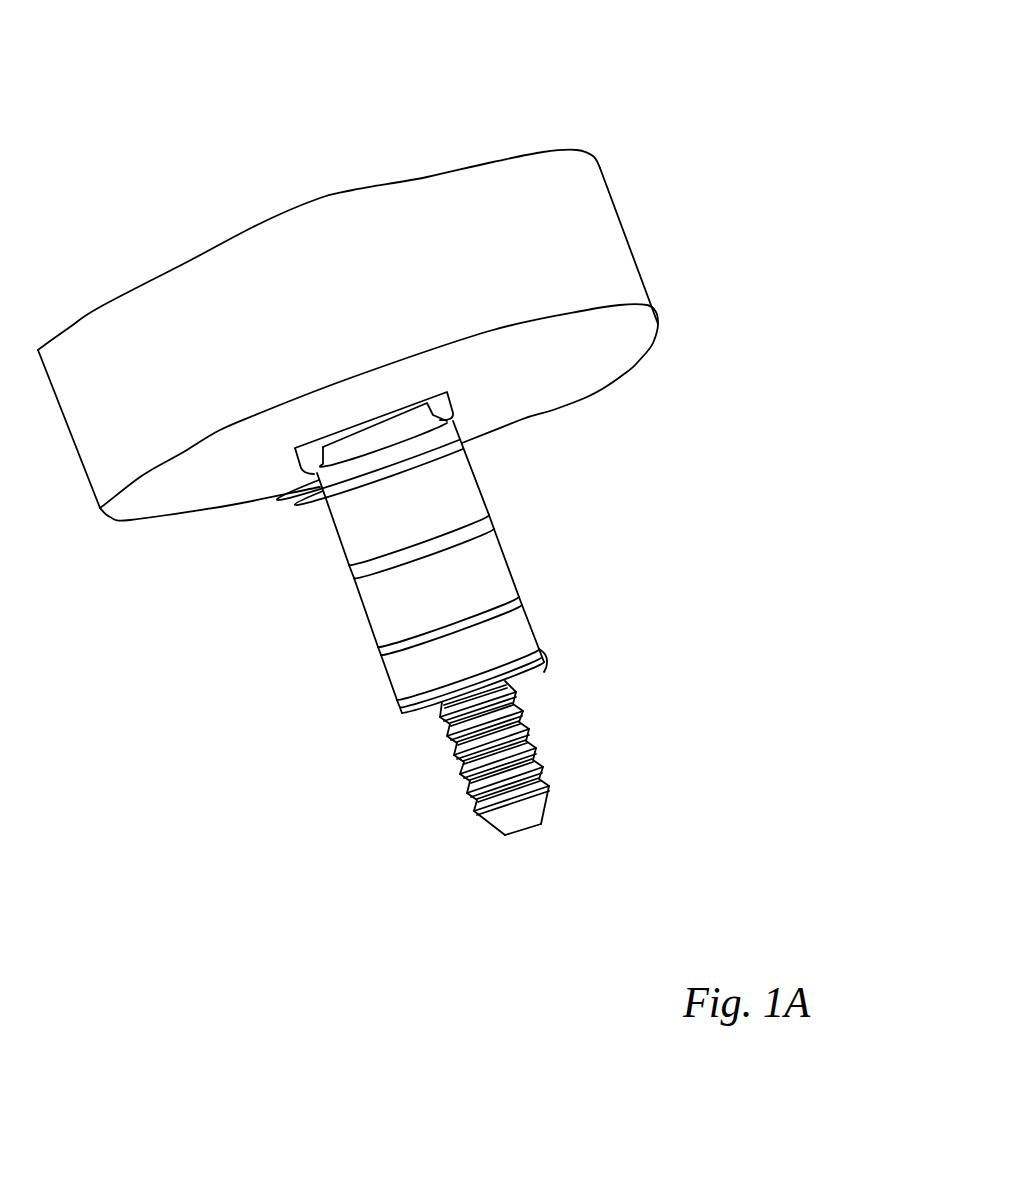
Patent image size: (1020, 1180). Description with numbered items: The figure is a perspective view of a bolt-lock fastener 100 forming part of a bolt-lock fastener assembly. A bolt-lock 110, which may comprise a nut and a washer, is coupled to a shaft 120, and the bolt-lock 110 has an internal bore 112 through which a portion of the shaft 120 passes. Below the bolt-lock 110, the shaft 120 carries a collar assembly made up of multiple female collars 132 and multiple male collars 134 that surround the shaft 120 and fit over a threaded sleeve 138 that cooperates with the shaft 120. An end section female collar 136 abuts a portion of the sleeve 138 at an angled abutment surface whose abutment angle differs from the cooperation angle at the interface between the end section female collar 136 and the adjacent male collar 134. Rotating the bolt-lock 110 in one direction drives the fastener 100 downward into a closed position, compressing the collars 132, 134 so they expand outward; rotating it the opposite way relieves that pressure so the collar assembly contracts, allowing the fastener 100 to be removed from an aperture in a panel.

The bolt-lock fastener 100 is at (706, 28).
The bolt-lock 110 is at (593, 262).
The internal bore 112 is at (450, 398).
The shaft 120 is at (514, 812).
The female collar 132 is at (460, 483).
The male collar 134 is at (487, 527).
The end section female collar 136 is at (507, 643).
The threaded sleeve 138 is at (538, 688).